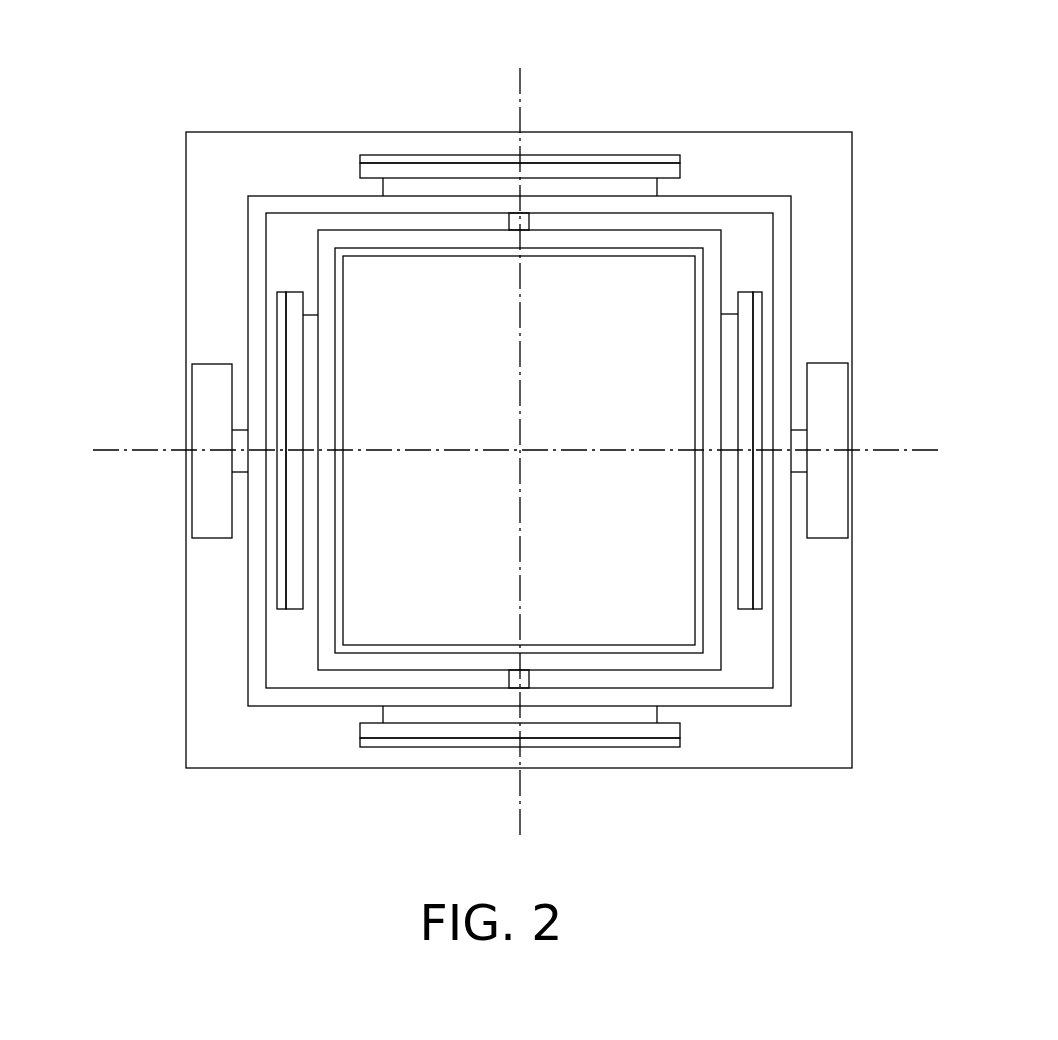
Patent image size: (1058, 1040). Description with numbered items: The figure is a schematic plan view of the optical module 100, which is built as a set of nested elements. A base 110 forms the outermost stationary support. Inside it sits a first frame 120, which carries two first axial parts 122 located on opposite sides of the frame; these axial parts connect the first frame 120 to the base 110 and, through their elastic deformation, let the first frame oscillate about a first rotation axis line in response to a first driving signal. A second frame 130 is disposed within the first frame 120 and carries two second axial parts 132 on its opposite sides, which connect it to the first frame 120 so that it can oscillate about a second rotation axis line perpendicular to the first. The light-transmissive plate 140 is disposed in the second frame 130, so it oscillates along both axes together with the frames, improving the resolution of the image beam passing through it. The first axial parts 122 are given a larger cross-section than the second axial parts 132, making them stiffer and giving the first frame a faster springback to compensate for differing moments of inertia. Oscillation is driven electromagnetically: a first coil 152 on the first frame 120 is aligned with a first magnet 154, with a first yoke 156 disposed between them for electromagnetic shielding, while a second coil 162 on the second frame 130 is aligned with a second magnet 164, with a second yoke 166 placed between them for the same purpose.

The optical module 100 is at (935, 885).
The base 110 is at (215, 215).
The first frame 120 is at (782, 677).
The first axial parts 122 is at (242, 456).
The second frame 130 is at (708, 237).
The second axial parts 132 is at (509, 223).
The light-transmissive plate 140 is at (358, 277).
The first coil 152 is at (493, 715).
The first magnet 154 is at (435, 732).
The first yoke 156 is at (383, 744).
The second coil 162 is at (730, 349).
The second magnet 164 is at (747, 334).
The second yoke 166 is at (758, 310).